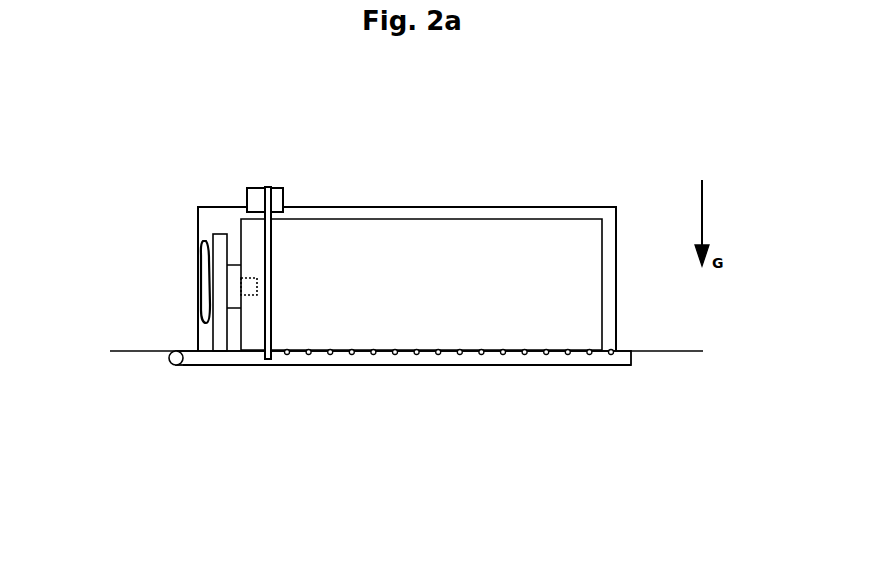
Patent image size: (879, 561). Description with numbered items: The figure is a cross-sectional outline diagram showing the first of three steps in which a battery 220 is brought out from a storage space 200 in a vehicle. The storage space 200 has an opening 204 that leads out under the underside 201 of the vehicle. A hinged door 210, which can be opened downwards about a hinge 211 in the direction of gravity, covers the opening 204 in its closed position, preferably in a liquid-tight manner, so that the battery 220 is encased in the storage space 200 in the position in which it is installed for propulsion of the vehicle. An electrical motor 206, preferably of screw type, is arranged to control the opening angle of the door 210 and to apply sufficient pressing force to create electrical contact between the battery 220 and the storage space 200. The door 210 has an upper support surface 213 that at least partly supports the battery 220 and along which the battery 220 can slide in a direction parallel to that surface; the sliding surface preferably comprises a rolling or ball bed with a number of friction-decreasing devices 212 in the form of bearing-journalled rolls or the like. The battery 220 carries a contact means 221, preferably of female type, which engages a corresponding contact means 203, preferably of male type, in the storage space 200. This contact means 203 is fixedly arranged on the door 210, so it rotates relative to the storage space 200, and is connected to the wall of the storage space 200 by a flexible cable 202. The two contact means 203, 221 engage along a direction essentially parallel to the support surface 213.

The storage space 200 is at (218, 206).
The underside of the vehicle 201 is at (673, 353).
The flexible cable 202 is at (198, 248).
The contact means 203 is at (203, 240).
The opening 204 is at (555, 373).
The electrical motor 206 is at (257, 188).
The hinged door 210 is at (213, 366).
The hinge 211 is at (170, 363).
The friction-decreasing devices 212 is at (308, 355).
The upper support surface 213 is at (559, 347).
The battery 220 is at (323, 217).
The contact means 221 is at (257, 285).